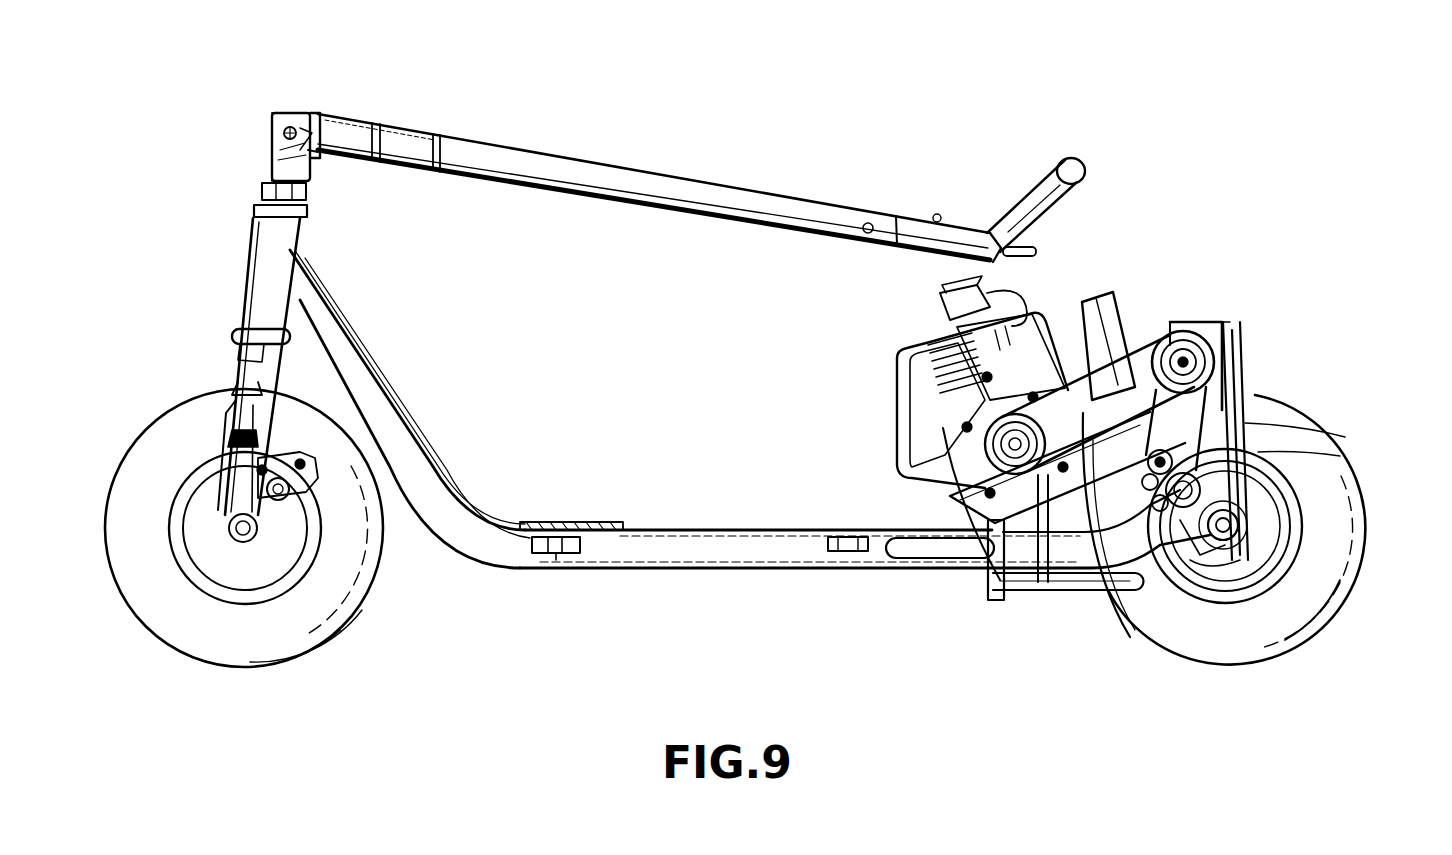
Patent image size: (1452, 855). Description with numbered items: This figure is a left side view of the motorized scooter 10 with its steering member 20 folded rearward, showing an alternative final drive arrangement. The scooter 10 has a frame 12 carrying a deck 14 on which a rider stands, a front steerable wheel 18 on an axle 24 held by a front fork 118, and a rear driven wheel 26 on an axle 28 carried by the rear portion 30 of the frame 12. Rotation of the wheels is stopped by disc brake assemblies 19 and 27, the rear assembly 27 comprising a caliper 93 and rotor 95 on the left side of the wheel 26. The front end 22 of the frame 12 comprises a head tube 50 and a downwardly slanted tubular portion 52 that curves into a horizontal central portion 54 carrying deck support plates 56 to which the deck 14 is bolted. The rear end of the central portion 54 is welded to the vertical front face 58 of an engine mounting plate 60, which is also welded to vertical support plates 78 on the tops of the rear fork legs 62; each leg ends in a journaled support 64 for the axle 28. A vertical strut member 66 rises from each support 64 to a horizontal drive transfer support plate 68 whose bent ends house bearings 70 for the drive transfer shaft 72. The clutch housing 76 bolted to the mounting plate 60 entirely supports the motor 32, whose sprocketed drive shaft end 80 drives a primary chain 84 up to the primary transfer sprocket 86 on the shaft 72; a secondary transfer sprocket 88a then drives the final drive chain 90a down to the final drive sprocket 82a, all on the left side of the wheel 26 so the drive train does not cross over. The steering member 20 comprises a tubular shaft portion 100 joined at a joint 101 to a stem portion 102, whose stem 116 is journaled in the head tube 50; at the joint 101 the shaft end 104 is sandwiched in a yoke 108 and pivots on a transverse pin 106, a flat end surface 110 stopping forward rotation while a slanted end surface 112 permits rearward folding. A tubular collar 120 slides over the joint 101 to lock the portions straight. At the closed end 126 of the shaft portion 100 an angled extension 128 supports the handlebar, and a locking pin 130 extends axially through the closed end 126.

The scooter 10 is at (553, 600).
The frame 12 is at (786, 576).
The deck 14 is at (590, 520).
The front steerable wheel 18 is at (200, 630).
The disc brake assembly 19 is at (307, 487).
The steering member 20 is at (603, 146).
The front end 22 is at (360, 317).
The axle 24 is at (238, 530).
The rear driven wheel 26 is at (1162, 627).
The disc brake assembly 27 is at (1150, 552).
The axle 28 is at (1262, 566).
The rear portion 30 is at (928, 577).
The motor 32 is at (1055, 311).
The head tube 50 is at (252, 272).
The downwardly slanted tubular portion 52 is at (387, 393).
The central portion 54 is at (713, 530).
The deck support plates 56 is at (582, 545).
The vertical front face 58 is at (985, 556).
The engine mounting plate 60 is at (1042, 580).
The rear fork legs 62 is at (913, 552).
The journaled support 64 is at (1237, 527).
The vertical strut member 66 is at (1242, 422).
The horizontal drive transfer support plate 68 is at (1186, 323).
The bearings 70 is at (1242, 376).
The drive transfer shaft 72 is at (1232, 360).
The clutch housing 76 is at (990, 478).
The vertical support plates 78 is at (1103, 580).
The sprocketed free end 80 is at (984, 443).
The final drive sprocket 82a is at (1213, 567).
The primary chain 84 is at (1148, 345).
The primary transfer sprocket 86 is at (1222, 322).
The secondary transfer sprocket 88a is at (1242, 368).
The final drive chain 90a is at (1258, 452).
The caliper 93 is at (1150, 461).
The rotor 95 is at (1256, 490).
The tubular shaft portion 100 is at (790, 198).
The joint 101 is at (240, 126).
The stem portion 102 is at (308, 180).
The end 104 is at (318, 120).
The transverse pin 106 is at (290, 127).
The yoke 108 is at (307, 157).
The flat end surface 110 is at (272, 117).
The slanted end surface 112 is at (272, 135).
The stem 116 is at (240, 350).
The front fork 118 is at (240, 380).
The tubular collar 120 is at (387, 123).
The closed end 126 is at (1003, 256).
The extension 128 is at (1088, 180).
The locking pin 130 is at (1037, 251).